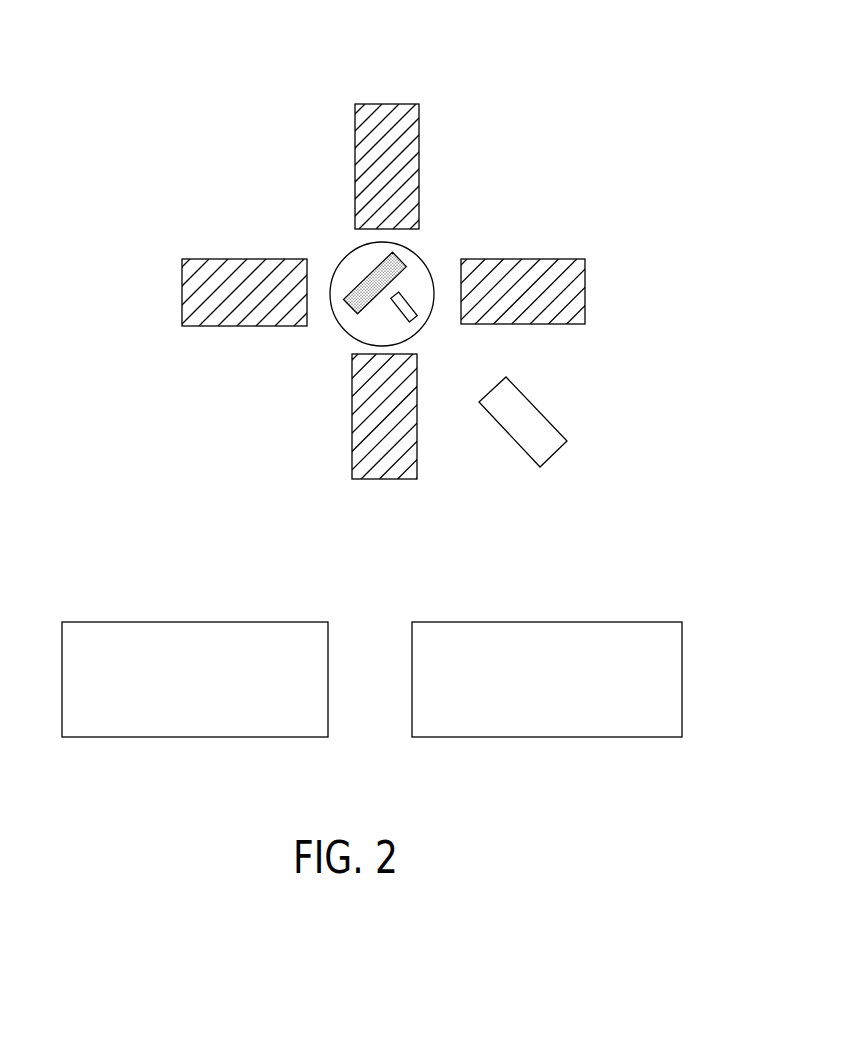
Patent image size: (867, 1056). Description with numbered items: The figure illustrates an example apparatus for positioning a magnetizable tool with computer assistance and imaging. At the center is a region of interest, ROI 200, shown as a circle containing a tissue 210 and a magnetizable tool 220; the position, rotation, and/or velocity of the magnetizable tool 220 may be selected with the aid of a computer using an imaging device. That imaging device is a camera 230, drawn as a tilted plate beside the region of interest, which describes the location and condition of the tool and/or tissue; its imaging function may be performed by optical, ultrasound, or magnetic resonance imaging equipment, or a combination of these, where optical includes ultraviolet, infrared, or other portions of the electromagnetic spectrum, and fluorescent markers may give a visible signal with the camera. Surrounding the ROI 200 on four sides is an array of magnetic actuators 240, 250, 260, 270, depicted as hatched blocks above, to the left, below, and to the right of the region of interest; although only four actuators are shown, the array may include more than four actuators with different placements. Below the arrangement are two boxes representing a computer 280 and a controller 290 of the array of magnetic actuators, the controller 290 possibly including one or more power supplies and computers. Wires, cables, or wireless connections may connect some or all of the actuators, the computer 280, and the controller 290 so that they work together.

The ROI 200 is at (345, 333).
The tissue 210 is at (363, 280).
The magnetizable tool 220 is at (410, 303).
The camera 230 is at (533, 402).
The magnetic actuator 240 is at (380, 103).
The magnetic actuator 250 is at (203, 260).
The magnetic actuator 260 is at (352, 415).
The magnetic actuator 270 is at (542, 259).
The computer 280 is at (203, 688).
The controller 290 is at (560, 688).